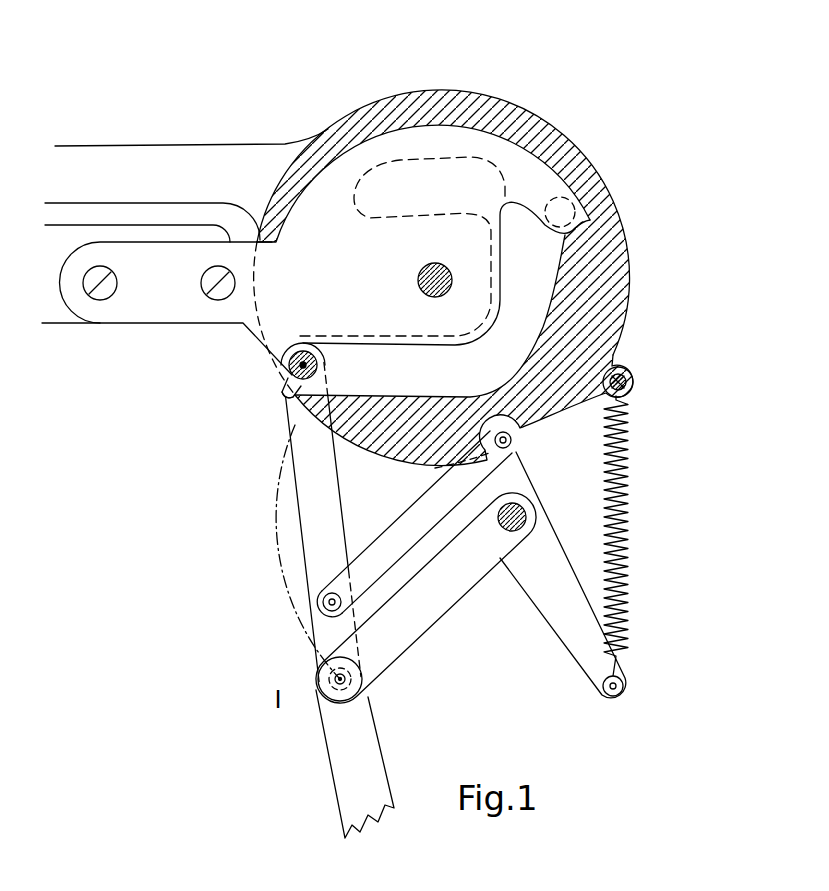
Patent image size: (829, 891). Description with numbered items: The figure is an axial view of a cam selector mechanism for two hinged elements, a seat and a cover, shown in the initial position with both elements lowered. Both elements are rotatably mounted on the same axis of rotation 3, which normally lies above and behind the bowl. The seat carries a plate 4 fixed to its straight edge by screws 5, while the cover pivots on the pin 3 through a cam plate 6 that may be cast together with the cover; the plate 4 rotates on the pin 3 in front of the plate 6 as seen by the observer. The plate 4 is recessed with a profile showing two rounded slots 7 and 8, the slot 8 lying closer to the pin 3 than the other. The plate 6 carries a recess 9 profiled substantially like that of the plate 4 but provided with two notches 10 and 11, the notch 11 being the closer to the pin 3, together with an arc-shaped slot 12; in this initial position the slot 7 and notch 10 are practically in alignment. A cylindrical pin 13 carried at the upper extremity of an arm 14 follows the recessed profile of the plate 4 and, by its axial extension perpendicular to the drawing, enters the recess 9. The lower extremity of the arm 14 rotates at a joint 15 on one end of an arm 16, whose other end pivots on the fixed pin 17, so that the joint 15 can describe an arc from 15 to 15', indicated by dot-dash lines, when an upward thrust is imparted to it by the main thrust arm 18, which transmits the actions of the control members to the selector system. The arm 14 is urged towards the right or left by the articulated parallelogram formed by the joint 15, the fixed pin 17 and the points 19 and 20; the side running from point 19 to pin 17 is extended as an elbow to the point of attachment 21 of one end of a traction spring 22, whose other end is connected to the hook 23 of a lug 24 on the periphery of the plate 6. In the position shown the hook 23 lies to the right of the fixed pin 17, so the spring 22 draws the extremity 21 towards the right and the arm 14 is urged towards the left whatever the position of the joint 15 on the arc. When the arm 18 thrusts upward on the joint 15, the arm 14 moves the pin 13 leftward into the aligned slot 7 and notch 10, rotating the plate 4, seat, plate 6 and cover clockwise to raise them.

The axis of rotation 3 is at (443, 283).
The plate 4 is at (290, 302).
The screws 5 is at (108, 292).
The cam plate 6 is at (547, 152).
The rounded slot 7 is at (302, 344).
The rounded slot 8 is at (498, 218).
The recess 9 is at (527, 318).
The notch 10 is at (287, 376).
The notch 11 is at (553, 195).
The arc-shaped slot 12 is at (420, 185).
The cylindrical pin 13 is at (320, 370).
The arm 14 is at (303, 473).
The joint 15 is at (310, 678).
The arc end point 15' is at (287, 552).
The arm 16 is at (408, 640).
The fixed pin 17 is at (527, 513).
The main thrust arm 18 is at (337, 743).
The parallelogram side joint 19 is at (512, 441).
The parallelogram joint 20 is at (330, 602).
The point of attachment 21 is at (625, 682).
The traction spring 22 is at (630, 523).
The hook 23 is at (626, 378).
The lug 24 is at (634, 384).